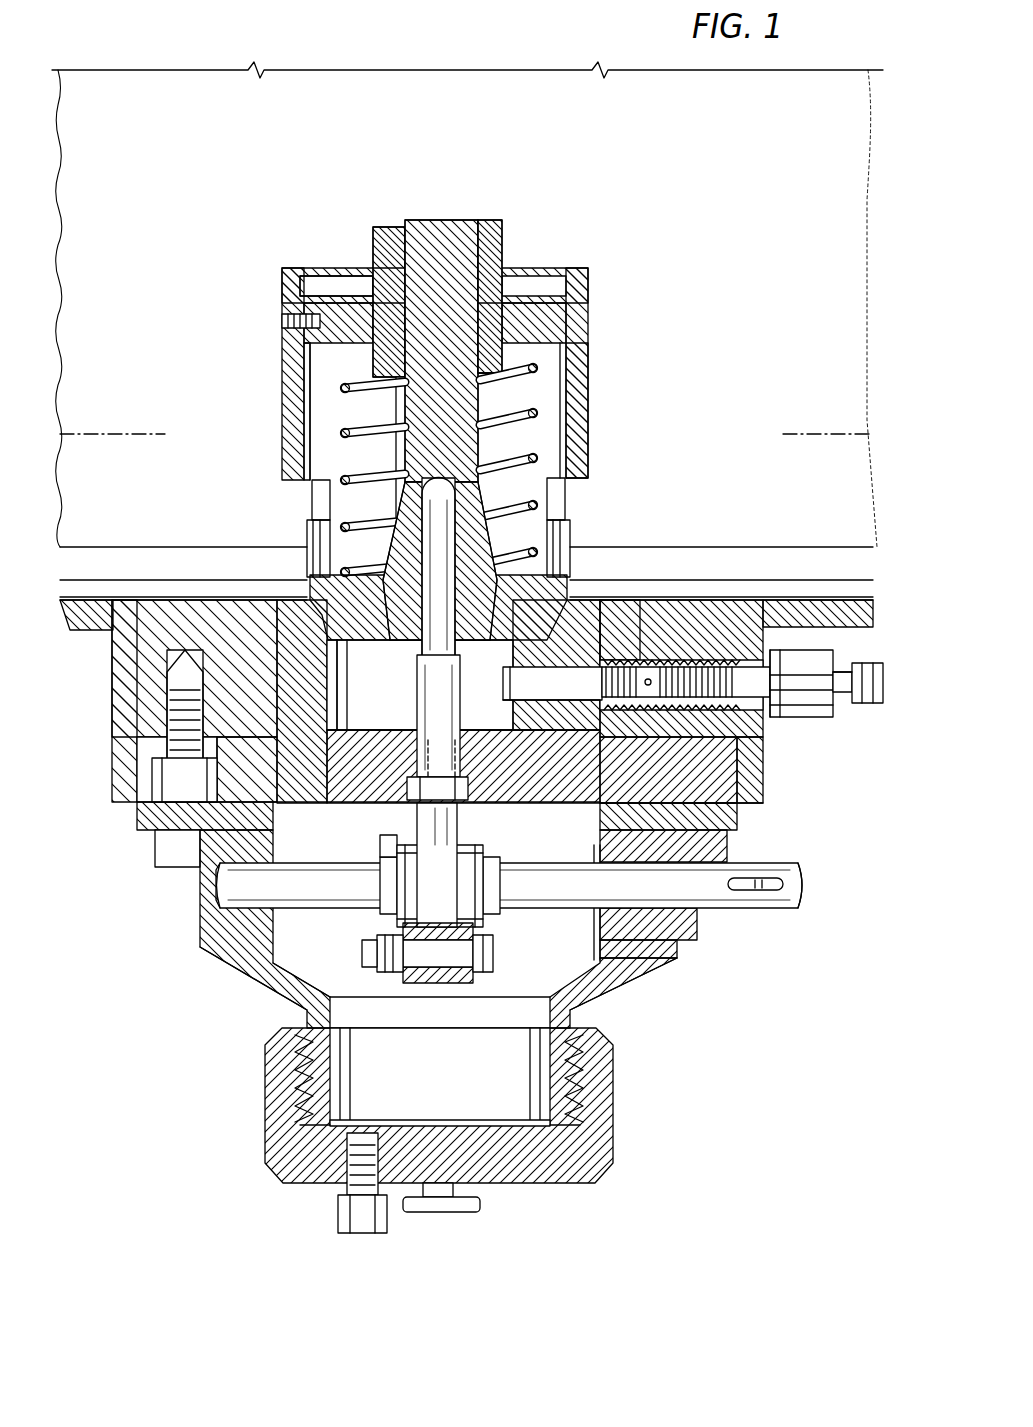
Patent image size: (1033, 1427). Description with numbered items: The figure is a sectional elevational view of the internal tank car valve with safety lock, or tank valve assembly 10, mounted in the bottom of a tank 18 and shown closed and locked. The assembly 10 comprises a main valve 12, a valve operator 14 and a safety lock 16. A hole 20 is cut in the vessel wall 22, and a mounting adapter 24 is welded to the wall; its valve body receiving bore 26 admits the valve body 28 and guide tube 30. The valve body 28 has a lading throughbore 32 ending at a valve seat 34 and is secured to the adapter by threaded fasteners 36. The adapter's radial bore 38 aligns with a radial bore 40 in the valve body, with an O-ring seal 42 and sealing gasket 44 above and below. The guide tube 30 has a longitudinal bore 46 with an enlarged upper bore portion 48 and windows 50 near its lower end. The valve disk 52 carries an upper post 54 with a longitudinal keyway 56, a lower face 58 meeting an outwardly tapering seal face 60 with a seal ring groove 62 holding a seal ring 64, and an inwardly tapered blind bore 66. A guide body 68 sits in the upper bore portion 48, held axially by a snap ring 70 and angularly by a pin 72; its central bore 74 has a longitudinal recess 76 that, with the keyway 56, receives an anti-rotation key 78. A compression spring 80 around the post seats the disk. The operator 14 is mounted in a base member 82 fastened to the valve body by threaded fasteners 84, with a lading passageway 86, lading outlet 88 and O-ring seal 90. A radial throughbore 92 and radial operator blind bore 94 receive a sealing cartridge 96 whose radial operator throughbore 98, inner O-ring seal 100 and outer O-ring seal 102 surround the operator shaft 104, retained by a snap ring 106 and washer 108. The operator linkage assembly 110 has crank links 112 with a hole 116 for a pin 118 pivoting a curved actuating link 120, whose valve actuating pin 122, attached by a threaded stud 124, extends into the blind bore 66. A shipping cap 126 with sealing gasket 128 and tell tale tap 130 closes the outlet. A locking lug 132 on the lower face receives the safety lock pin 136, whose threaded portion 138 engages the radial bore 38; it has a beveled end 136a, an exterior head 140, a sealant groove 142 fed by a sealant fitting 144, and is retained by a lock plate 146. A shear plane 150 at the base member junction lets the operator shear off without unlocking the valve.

The tank valve assembly 10 is at (122, 382).
The main valve 12 is at (285, 360).
The valve operator 14 is at (808, 898).
The safety lock 16 is at (830, 722).
The tank 18 is at (845, 595).
The hole 20 is at (113, 650).
The vessel wall 22 is at (95, 595).
The mounting adapter 24 is at (147, 595).
The valve body receiving bore 26 is at (275, 625).
The valve body 28 is at (610, 620).
The guide tube 30 is at (290, 455).
The lading throughbore 32 is at (402, 721).
The valve seat 34 is at (345, 650).
The threaded fasteners 36 is at (150, 780).
The radial bore 38 is at (700, 655).
The radial bore 40 is at (540, 742).
The O-ring seal 42 is at (280, 625).
The sealing gasket 44 is at (640, 740).
The longitudinal bore 46 is at (590, 360).
The upper bore portion 48 is at (300, 280).
The windows 50 is at (570, 480).
The valve disk 52 is at (585, 630).
The upper post 54 is at (440, 220).
The longitudinal keyway 56 is at (385, 410).
The lower face 58 is at (457, 582).
The seal face 60 is at (575, 650).
The seal ring groove 62 is at (330, 600).
The seal ring 64 is at (550, 600).
The blind bore 66 is at (318, 550).
The guide body 68 is at (495, 240).
The snap ring 70 is at (580, 290).
The pin 72 is at (285, 320).
The central bore 74 is at (480, 220).
The longitudinal recess 76 is at (395, 230).
The anti-rotation key 78 is at (375, 240).
The compression spring 80 is at (540, 388).
The base member 82 is at (200, 960).
The threaded fasteners 84 is at (215, 872).
The lading passageway 86 is at (270, 965).
The lading outlet 88 is at (600, 1077).
The O-ring seal 90 is at (170, 845).
The radial throughbore 92 is at (665, 955).
The radial operator blind bore 94 is at (215, 892).
The sealing cartridge 96 is at (700, 920).
The radial operator throughbore 98 is at (700, 845).
The inner O-ring seal 100 is at (598, 833).
The outer O-ring seal 102 is at (740, 800).
The operator shaft 104 is at (805, 872).
The snap ring 106 is at (590, 972).
The washer 108 is at (605, 952).
The operator linkage assembly 110 is at (440, 995).
The crank links 112 is at (400, 830).
The hole 116 is at (408, 975).
The pin 118 is at (495, 950).
The curved actuating link 120 is at (455, 820).
The valve actuating pin 122 is at (430, 740).
The threaded stud 124 is at (410, 800).
The shipping cap 126 is at (265, 1100).
The sealing gasket 128 is at (600, 1130).
The tell tale tap 130 is at (338, 1215).
The locking lug 132 is at (510, 716).
The safety lock pin 136 is at (740, 665).
The beveled end 136a is at (552, 683).
The threaded portion 138 is at (660, 665).
The exterior head 140 is at (820, 655).
The sealant groove 142 is at (570, 770).
The sealant fitting 144 is at (872, 705).
The lock plate 146 is at (770, 720).
The shear plane 150 is at (130, 810).